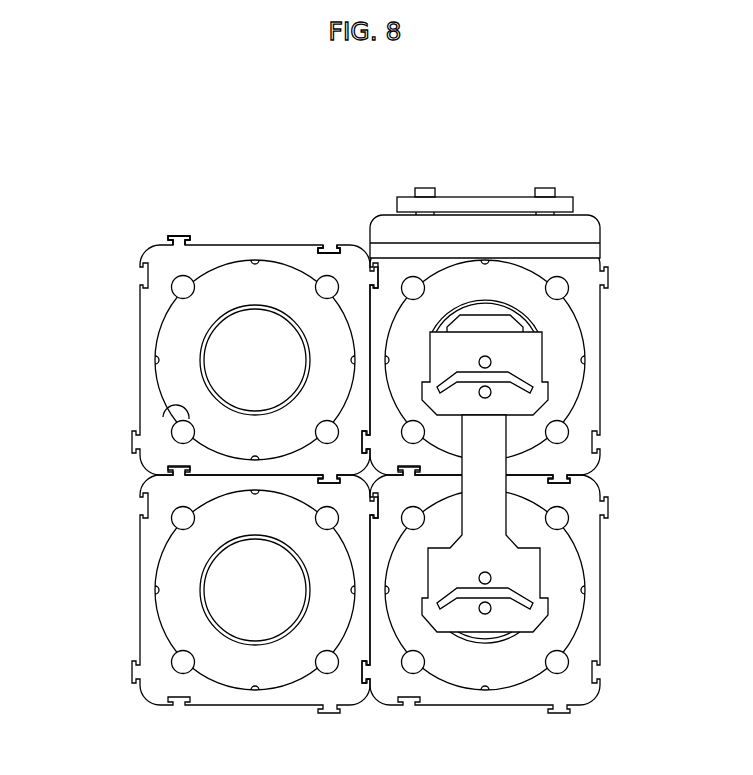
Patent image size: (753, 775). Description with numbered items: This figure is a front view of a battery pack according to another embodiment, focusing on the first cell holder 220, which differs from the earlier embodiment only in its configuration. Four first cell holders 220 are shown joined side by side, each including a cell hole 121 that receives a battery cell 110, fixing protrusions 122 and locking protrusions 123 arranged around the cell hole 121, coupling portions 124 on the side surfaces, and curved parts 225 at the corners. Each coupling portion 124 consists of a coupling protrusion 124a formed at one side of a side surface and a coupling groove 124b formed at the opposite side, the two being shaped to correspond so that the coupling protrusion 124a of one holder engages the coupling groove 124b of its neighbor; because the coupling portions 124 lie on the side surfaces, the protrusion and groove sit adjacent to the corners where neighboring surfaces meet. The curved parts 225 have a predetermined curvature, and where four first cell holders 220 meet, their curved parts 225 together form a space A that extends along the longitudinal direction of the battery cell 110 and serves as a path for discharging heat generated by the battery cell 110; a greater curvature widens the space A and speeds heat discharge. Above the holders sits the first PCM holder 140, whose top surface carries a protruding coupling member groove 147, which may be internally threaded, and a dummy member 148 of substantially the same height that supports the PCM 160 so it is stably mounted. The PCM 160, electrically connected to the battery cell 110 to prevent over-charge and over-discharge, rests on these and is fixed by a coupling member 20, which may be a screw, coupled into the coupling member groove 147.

The coupling member 20 is at (544, 188).
The battery cell 110 is at (217, 369).
The cell hole 121 is at (178, 437).
The fixing protrusions 122 is at (153, 358).
The locking protrusions 123 is at (172, 280).
The coupling portions 124 is at (190, 169).
The coupling protrusion 124a is at (183, 236).
The coupling groove 124b is at (332, 245).
The first PCM holder 140 is at (587, 232).
The coupling member groove 147 is at (572, 212).
The dummy member 148 is at (400, 215).
The PCM 160 is at (566, 200).
The first cell holder 220 is at (150, 322).
The curved parts 225 is at (370, 258).
The space A is at (363, 486).